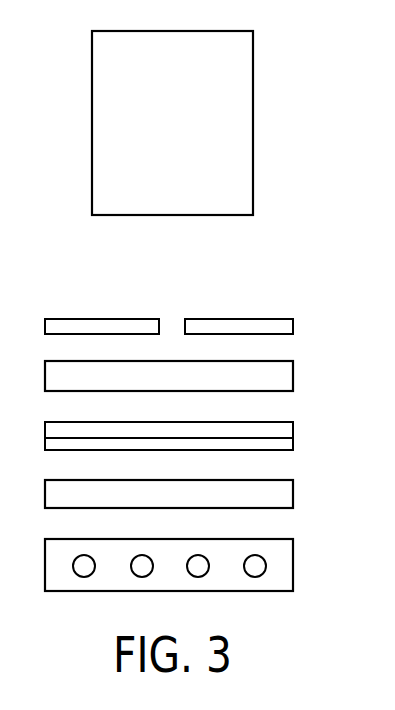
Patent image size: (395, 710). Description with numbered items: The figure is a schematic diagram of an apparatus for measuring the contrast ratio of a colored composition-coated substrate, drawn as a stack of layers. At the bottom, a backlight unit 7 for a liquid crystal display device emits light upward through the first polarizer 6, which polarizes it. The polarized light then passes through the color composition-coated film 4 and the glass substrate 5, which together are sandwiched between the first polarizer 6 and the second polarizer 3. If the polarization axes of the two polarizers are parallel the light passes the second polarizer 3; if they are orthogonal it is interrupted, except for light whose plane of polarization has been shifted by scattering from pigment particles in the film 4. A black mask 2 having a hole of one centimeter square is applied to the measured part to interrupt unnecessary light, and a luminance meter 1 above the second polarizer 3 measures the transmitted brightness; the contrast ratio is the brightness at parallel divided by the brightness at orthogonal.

The luminance meter 1 is at (253, 120).
The black mask 2 is at (293, 323).
The second polarizer 3 is at (293, 372).
The color composition-coated film 4 is at (293, 424).
The glass substrate 5 is at (293, 442).
The first polarizer 6 is at (293, 492).
The backlight unit 7 is at (293, 562).